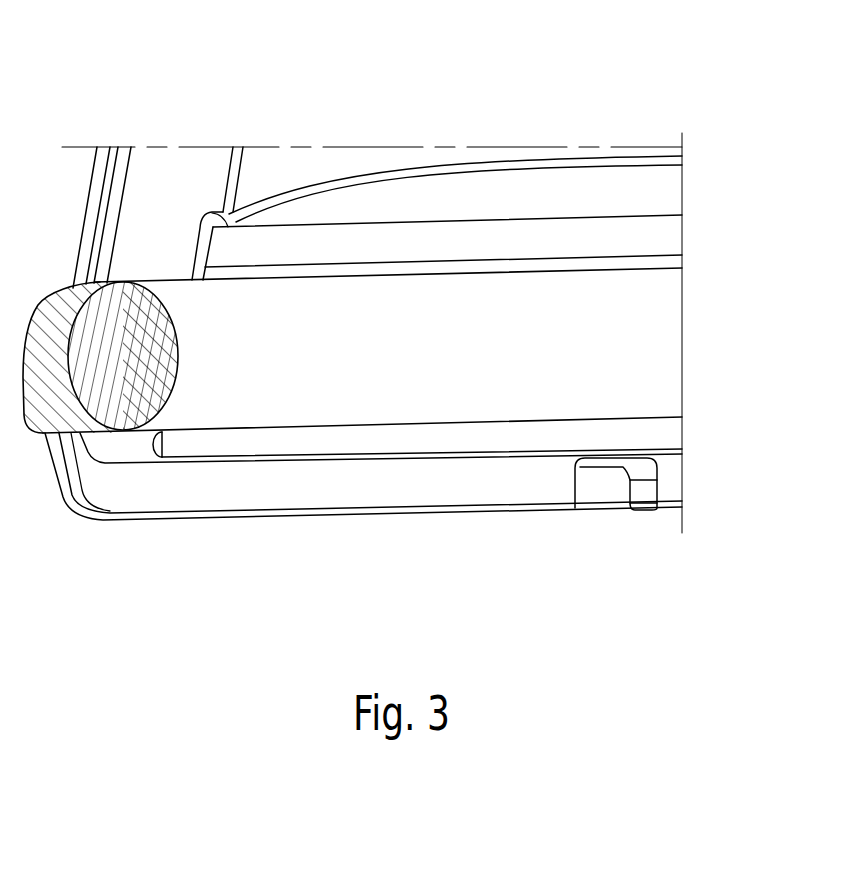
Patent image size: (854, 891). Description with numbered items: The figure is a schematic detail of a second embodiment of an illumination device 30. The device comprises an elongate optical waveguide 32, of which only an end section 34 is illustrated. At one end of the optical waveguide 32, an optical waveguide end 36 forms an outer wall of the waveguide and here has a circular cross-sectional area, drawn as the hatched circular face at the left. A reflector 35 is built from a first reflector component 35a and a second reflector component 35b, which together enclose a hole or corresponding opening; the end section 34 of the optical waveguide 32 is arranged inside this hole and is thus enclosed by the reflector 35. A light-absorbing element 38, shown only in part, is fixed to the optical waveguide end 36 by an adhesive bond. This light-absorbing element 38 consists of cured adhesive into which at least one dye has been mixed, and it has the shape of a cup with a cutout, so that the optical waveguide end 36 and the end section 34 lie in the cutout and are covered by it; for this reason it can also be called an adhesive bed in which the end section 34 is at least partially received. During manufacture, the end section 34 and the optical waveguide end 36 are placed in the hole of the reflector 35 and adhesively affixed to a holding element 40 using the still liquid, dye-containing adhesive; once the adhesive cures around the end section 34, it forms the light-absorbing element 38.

The illumination device 30 is at (557, 128).
The optical waveguide 32 is at (438, 377).
The end section 34 is at (297, 426).
The reflector 35 is at (695, 185).
The first reflector component 35a is at (640, 240).
The second reflector component 35b is at (642, 435).
The optical waveguide end 36 is at (146, 302).
The light-absorbing element 38 is at (43, 323).
The holding element 40 is at (104, 201).